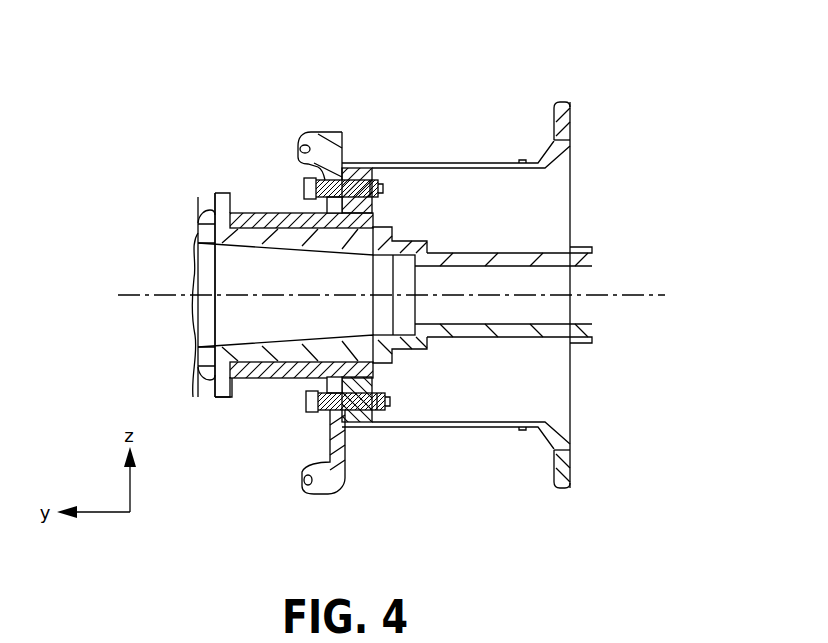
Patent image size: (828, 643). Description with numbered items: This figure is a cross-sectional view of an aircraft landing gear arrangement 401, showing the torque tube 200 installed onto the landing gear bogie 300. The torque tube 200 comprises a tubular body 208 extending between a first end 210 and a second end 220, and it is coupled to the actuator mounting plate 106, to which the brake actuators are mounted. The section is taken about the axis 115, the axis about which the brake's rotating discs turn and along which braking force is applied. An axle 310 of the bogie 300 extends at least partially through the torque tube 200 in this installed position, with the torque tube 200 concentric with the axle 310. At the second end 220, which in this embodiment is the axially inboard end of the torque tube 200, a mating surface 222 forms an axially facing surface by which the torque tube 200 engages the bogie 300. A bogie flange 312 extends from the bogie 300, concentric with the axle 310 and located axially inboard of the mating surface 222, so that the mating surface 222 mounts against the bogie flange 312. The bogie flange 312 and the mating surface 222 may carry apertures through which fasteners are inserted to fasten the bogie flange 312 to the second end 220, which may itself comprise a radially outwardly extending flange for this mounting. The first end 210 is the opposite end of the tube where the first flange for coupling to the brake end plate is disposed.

The aircraft landing gear arrangement 401 is at (160, 120).
The torque tube 200 is at (445, 161).
The first end 210 is at (557, 100).
The second end 220 is at (242, 212).
The mating surface 222 is at (200, 224).
The landing gear bogie 300 is at (199, 230).
The tubular body 208 is at (298, 222).
The axis 115 is at (143, 295).
The bogie flange 312 is at (220, 398).
The axle 310 is at (590, 340).
The actuator mounting plate 106 is at (345, 484).